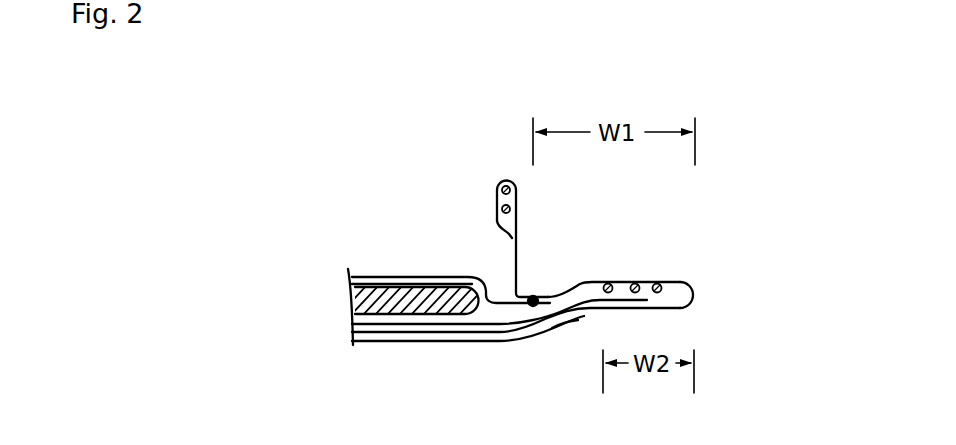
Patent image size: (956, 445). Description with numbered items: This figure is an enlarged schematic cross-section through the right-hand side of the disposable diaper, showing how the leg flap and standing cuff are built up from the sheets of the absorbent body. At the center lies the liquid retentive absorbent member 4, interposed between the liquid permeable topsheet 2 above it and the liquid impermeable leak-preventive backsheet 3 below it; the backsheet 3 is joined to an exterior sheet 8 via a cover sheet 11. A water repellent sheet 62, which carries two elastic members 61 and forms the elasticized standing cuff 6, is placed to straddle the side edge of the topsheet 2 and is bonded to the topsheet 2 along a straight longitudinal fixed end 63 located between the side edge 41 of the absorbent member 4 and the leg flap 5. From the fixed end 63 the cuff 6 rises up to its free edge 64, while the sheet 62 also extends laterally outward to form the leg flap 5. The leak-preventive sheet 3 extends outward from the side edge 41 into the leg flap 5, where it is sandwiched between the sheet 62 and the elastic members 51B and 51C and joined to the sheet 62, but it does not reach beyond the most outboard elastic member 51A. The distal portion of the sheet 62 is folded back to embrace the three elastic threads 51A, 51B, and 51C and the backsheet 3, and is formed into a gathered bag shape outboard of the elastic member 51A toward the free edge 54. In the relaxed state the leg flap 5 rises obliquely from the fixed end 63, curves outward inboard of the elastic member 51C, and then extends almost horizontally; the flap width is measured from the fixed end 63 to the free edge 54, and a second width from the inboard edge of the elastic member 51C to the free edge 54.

The topsheet 2 is at (432, 276).
The backsheet 3 is at (371, 327).
The absorbent member 4 is at (362, 274).
The leg flap 5 is at (669, 250).
The standing cuff 6 is at (476, 197).
The exterior sheet 8 is at (541, 343).
The cover sheet 11 is at (426, 336).
The side edge of the absorbent member 41 is at (481, 325).
The elastic member 51A is at (661, 283).
The elastic member 51B is at (636, 283).
The elastic member 51C is at (604, 284).
The free edge 54 is at (693, 290).
The elastic members 61 is at (498, 211).
The water repellent sheet 62 is at (518, 250).
The fixed end 63 is at (537, 296).
The free edge of the cuff 64 is at (503, 178).